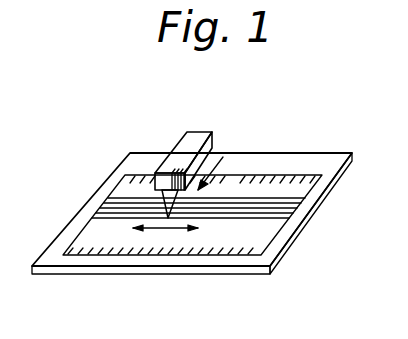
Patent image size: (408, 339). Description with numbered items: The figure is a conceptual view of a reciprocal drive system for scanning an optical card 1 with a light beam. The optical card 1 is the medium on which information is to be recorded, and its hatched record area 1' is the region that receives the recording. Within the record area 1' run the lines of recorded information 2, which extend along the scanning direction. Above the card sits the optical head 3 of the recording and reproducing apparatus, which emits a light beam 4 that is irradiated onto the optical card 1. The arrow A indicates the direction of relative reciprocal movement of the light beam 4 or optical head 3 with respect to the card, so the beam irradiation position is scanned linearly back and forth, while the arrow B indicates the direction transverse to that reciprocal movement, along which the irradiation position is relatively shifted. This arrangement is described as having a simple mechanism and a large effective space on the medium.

The optical card 1 is at (192, 186).
The record area 1' is at (220, 215).
The lines of recorded information 2 is at (275, 220).
The optical head 3 is at (201, 139).
The light beam 4 is at (160, 192).
The direction of relative reciprocal movement A is at (165, 239).
The transverse direction B is at (221, 171).